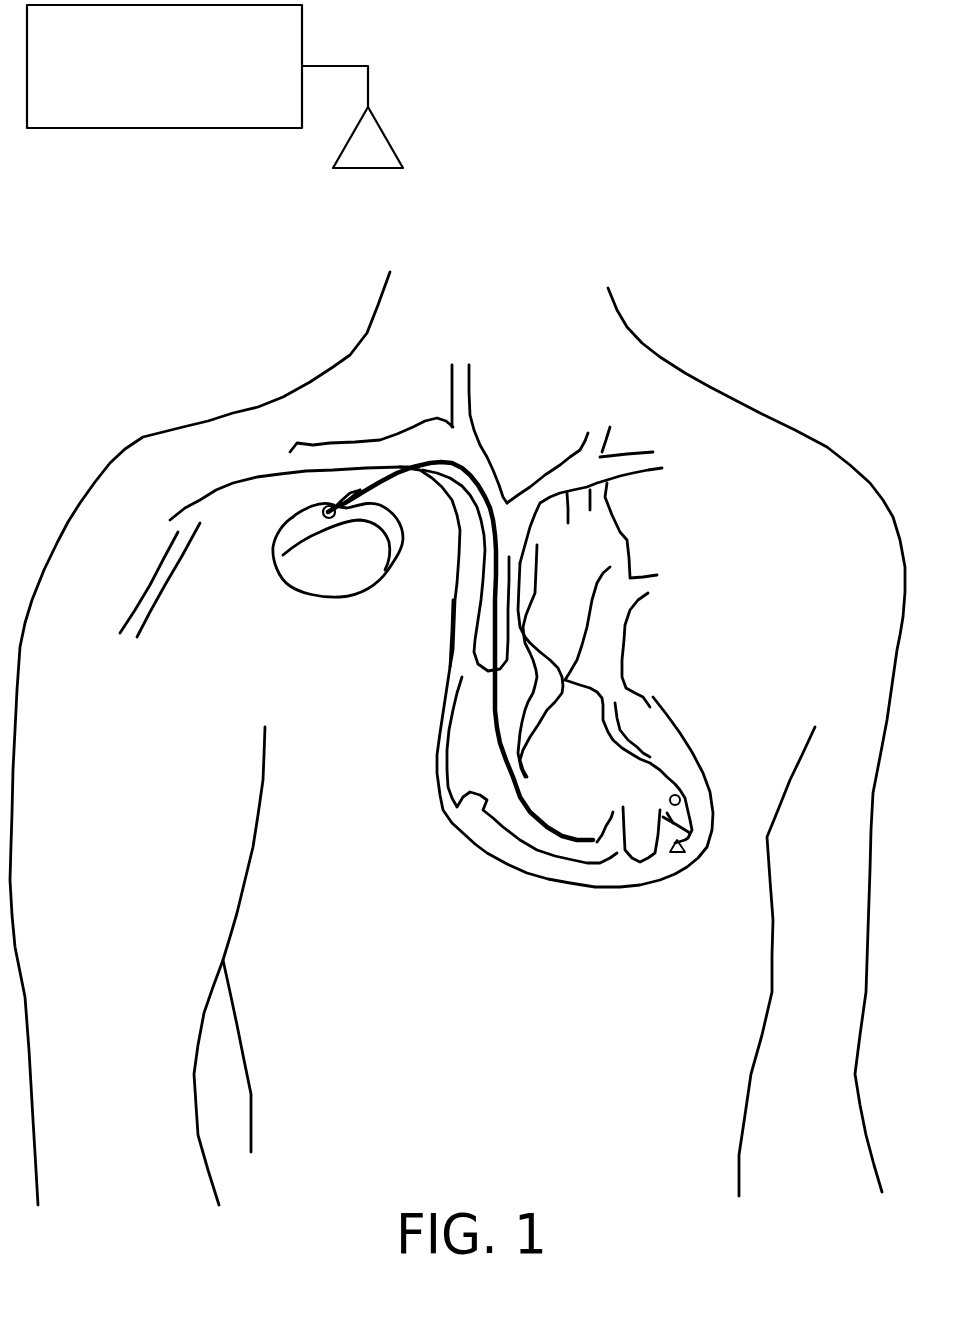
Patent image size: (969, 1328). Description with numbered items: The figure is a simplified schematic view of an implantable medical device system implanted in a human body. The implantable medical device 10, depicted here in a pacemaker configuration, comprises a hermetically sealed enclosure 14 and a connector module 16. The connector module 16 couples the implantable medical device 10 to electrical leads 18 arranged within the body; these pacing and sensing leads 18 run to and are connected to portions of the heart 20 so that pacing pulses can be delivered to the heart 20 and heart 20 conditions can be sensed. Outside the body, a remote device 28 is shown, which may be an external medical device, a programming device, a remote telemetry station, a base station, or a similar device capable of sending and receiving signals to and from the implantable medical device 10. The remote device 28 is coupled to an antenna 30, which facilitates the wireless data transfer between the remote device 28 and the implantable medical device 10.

The implantable medical device 10 is at (300, 562).
The hermetically sealed enclosure 14 is at (338, 569).
The connector module 16 is at (278, 482).
The electrical leads 18 is at (460, 651).
The heart 20 is at (575, 776).
The remote device 28 is at (152, 108).
The antenna 30 is at (393, 150).